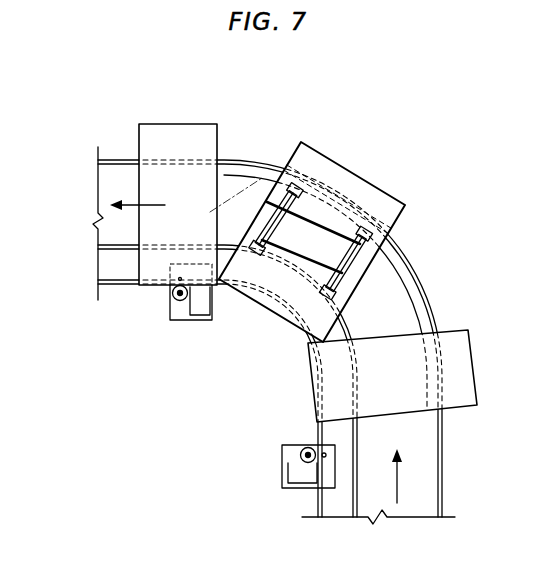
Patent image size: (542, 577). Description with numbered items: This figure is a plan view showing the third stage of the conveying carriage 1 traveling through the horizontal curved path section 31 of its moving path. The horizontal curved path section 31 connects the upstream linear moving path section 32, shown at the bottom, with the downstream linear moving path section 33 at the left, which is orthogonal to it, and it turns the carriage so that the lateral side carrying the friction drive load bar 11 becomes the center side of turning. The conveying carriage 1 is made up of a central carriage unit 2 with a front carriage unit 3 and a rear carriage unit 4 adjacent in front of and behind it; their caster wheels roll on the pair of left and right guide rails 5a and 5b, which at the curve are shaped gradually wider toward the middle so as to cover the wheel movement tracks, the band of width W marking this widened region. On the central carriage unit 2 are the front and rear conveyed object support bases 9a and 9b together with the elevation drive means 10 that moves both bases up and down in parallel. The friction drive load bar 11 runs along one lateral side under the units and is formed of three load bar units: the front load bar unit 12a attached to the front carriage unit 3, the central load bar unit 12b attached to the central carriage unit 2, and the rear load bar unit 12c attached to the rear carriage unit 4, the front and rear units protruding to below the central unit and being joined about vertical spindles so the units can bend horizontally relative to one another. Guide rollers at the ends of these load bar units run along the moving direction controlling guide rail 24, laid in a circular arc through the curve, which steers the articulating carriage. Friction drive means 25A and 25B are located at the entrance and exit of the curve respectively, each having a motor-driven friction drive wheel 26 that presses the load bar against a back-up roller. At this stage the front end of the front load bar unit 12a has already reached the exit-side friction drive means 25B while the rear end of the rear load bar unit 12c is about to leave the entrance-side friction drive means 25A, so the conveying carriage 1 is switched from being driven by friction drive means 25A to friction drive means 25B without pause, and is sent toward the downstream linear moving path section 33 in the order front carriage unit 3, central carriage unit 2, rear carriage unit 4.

The conveying carriage 1 is at (338, 216).
The central carriage unit 2 is at (368, 190).
The front carriage unit 3 is at (178, 137).
The rear carriage unit 4 is at (464, 366).
The guide rail 5a is at (110, 246).
The guide rail 5b is at (110, 166).
The conveyed object support base 9a is at (245, 180).
The conveyed object support base 9b is at (368, 268).
The elevation drive means 10 is at (313, 228).
The friction drive load bar 11 is at (303, 343).
The front load bar unit 12a is at (162, 272).
The central load bar unit 12b is at (252, 303).
The rear load bar unit 12c is at (307, 380).
The moving direction controlling guide rail 24 is at (122, 286).
The friction drive means 25A is at (280, 472).
The friction drive means 25B is at (172, 330).
The friction drive wheel 26 is at (172, 293).
The horizontal curved path section 31 is at (352, 292).
The upstream linear moving path section 32 is at (449, 471).
The downstream linear moving path section 33 is at (122, 155).
The path width W is at (410, 298).